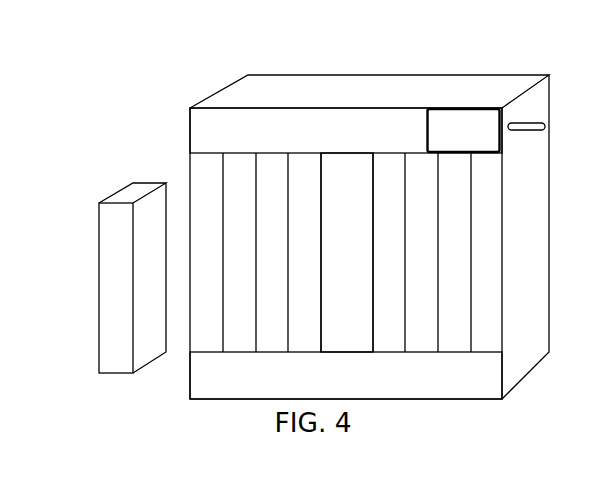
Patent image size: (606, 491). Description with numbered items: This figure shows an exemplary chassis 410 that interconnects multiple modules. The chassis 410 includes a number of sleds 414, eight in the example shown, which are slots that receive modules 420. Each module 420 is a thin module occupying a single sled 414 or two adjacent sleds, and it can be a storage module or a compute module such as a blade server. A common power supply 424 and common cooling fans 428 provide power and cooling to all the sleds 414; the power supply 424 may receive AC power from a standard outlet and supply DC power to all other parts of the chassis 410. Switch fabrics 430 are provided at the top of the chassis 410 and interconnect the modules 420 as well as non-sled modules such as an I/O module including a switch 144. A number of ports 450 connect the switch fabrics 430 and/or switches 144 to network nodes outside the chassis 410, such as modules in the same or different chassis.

The chassis 410 is at (458, 62).
The switch fabrics 430 is at (346, 130).
The ports 450 is at (464, 131).
The switch 144 is at (531, 121).
The sleds 414 is at (565, 183).
The cooling fans 428 is at (347, 252).
The power supply 424 is at (346, 375).
The module 420 is at (208, 234).